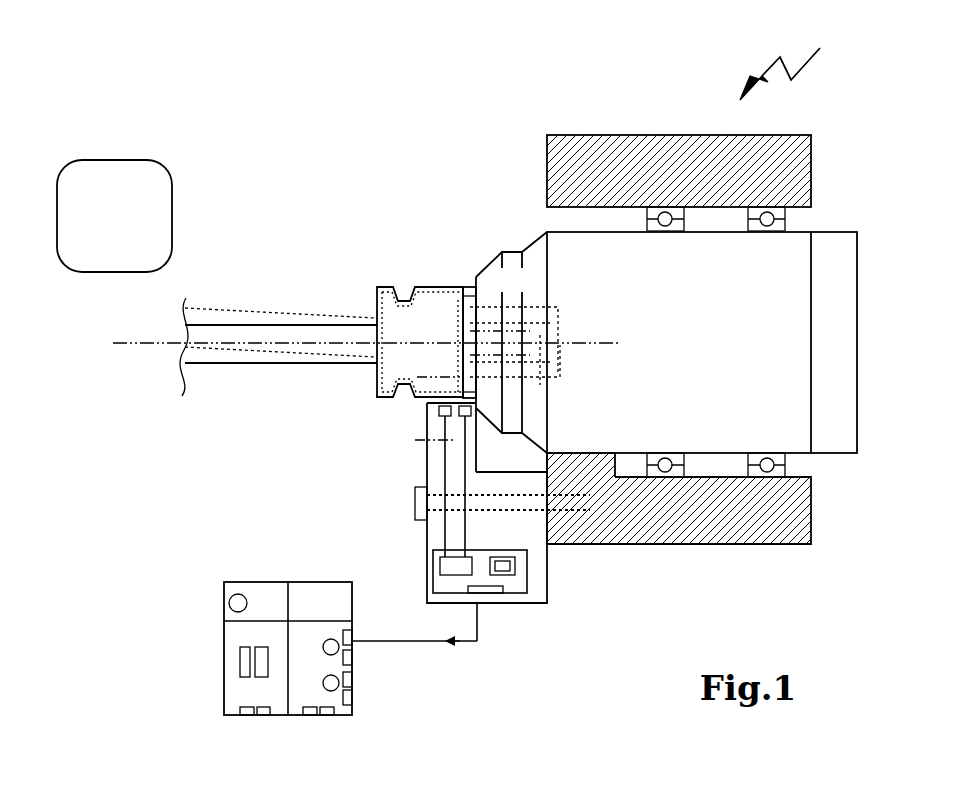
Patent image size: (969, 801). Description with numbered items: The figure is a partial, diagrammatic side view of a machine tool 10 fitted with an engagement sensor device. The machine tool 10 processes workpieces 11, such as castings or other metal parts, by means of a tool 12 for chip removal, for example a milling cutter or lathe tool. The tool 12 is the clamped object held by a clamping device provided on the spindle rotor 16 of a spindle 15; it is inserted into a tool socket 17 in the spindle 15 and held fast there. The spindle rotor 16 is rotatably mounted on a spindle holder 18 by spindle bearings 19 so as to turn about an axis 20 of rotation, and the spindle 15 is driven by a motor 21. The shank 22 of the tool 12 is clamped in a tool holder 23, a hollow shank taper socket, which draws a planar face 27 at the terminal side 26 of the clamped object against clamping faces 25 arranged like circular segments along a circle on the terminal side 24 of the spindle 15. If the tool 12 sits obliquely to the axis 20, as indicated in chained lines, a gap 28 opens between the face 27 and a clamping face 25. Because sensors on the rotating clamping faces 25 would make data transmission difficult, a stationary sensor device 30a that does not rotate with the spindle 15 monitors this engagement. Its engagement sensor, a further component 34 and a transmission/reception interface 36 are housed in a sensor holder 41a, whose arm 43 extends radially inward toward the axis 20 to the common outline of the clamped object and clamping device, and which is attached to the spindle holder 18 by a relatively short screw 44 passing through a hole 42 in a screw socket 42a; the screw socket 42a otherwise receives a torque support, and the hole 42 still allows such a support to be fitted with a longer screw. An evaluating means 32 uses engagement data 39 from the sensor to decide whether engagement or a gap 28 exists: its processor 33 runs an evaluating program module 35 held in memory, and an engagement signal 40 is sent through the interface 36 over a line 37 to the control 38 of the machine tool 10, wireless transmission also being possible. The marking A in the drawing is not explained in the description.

The machine tool 10 is at (793, 60).
The workpieces 11 is at (100, 163).
The tool 12 is at (336, 320).
The spindle 15 is at (798, 250).
The spindle rotor 16 is at (516, 258).
The tool socket 17 is at (548, 380).
The spindle holder 18 is at (611, 140).
The spindle bearings 19 is at (680, 233).
The axis of rotation 20 is at (133, 348).
The motor 21 is at (828, 440).
The shank 22 is at (552, 348).
The tool holder 23 is at (550, 385).
The terminal side 24 is at (468, 287).
The clamping faces 25 is at (452, 395).
The terminal side 26 is at (470, 296).
The face of the clamped object 27 is at (472, 392).
The gap 28 is at (456, 372).
The sensor device 30a is at (412, 445).
The evaluating means 32 is at (540, 592).
The processor 33 is at (443, 572).
The further component 34 is at (512, 568).
The evaluating program module 35 is at (500, 558).
The transmission/reception interface 36 is at (487, 593).
The line 37 is at (410, 643).
The control 38 is at (222, 620).
The engagement data 39 is at (468, 466).
The engagement signal 40 is at (450, 648).
The sensor holder 41a is at (421, 522).
The hole 42 is at (581, 467).
The screw socket 42a is at (679, 510).
The arm 43 is at (473, 462).
The screw 44 is at (418, 502).
The axis A is at (415, 413).